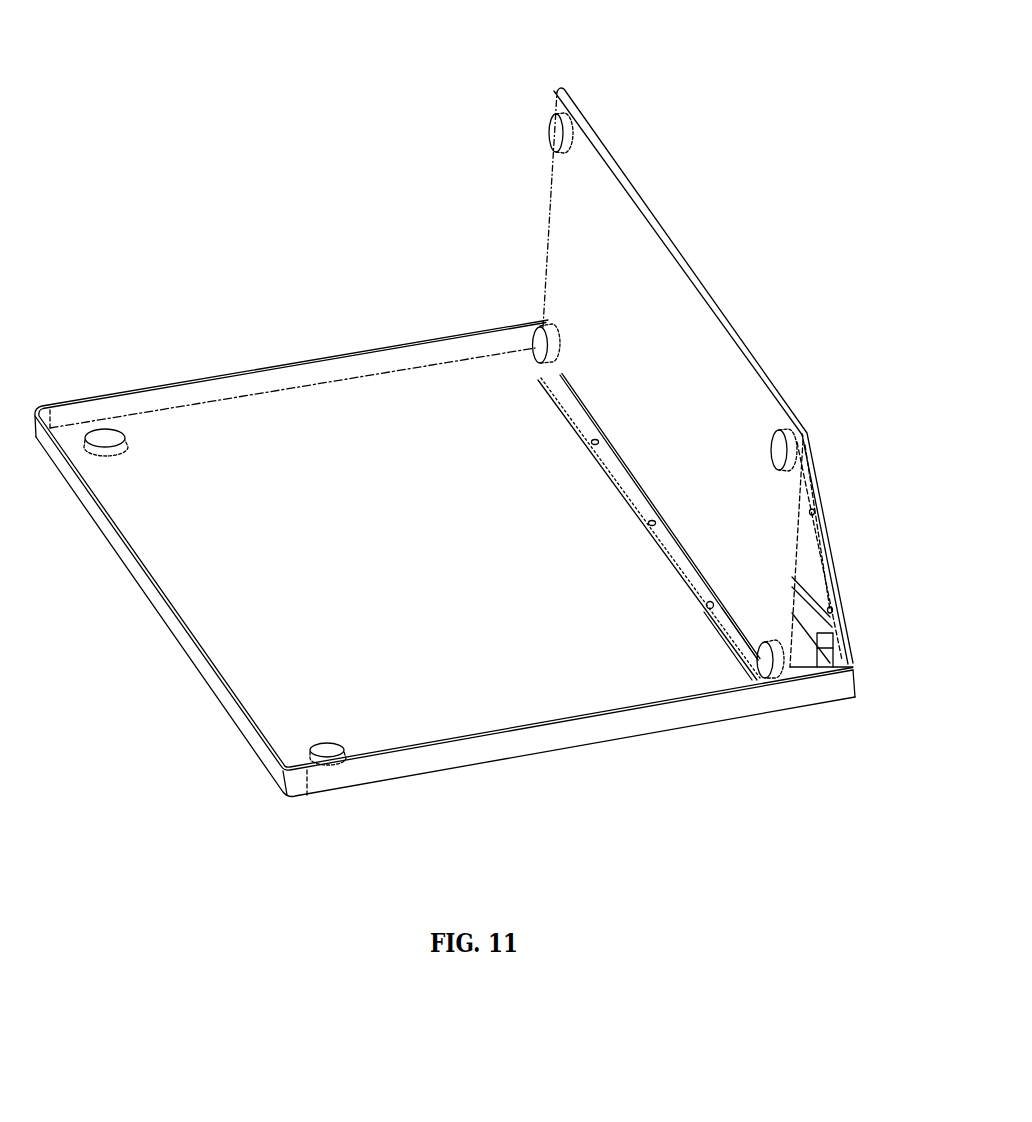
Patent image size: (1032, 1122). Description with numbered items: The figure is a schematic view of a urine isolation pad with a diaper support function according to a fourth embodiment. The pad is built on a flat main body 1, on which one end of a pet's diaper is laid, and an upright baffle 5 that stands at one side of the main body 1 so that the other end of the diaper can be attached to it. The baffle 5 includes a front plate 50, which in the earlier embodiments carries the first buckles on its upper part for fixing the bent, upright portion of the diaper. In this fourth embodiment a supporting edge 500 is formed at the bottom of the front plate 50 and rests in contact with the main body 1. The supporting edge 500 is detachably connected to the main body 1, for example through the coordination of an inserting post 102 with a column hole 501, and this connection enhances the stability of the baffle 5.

The main body 1 is at (278, 438).
The baffle 5 is at (695, 272).
The front plate 50 is at (579, 289).
The supporting edge 500 is at (738, 655).
The column hole 501 is at (699, 617).
The inserting post 102 is at (783, 683).